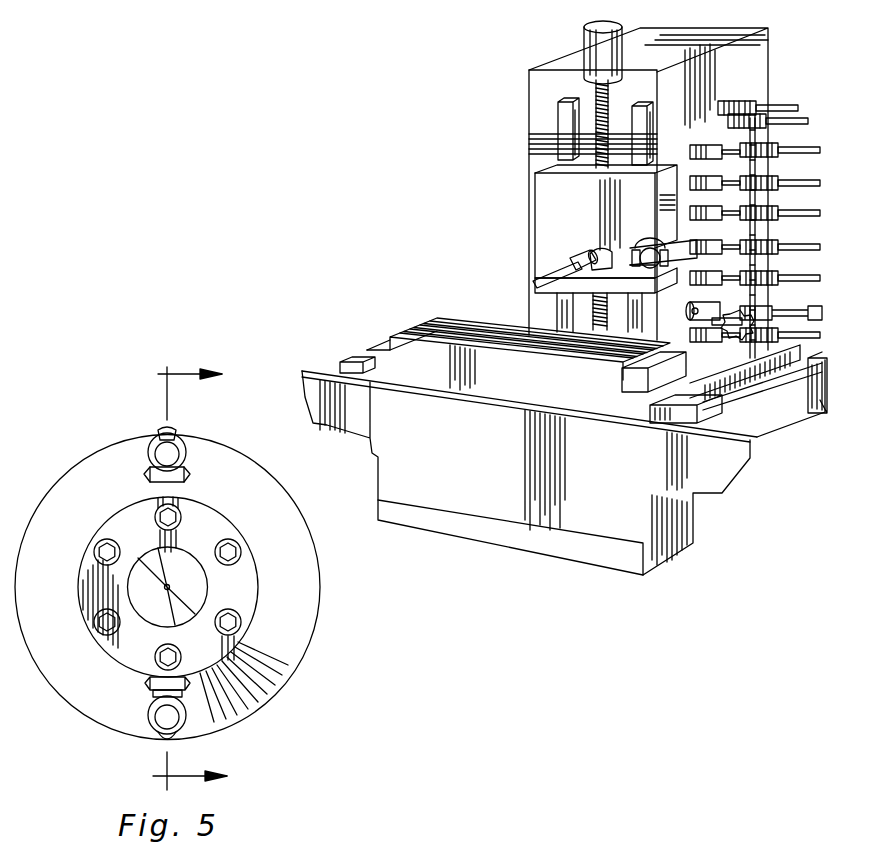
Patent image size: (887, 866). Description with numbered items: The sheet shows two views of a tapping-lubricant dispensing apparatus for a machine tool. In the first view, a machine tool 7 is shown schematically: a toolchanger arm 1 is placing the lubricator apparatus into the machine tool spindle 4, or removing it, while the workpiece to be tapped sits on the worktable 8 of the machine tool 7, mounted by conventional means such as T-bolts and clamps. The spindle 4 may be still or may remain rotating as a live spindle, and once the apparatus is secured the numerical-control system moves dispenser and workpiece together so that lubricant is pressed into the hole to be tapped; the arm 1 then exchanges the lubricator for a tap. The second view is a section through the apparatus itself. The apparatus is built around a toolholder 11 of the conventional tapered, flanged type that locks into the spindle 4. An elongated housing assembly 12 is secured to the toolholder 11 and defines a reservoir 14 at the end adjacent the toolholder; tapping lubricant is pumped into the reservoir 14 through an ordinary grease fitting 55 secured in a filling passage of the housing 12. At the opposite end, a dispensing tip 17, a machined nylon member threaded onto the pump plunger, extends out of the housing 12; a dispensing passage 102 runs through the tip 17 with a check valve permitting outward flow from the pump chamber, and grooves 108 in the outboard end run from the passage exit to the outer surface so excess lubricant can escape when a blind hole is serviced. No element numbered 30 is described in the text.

In FIG. 1A, the machine tool 7 is at (489, 170).
In FIG. 1A, the toolchanger arm 1 is at (626, 247).
In FIG. 1A, the machine tool spindle 4 is at (587, 249).
In FIG. 1A, the worktable 8 is at (388, 348).
In FIG. 1A, the tool indexing gear 30 is at (688, 312).
In FIG. 5, the elongated housing assembly 12 is at (321, 600).
In FIG. 5, the reservoir 14 is at (285, 633).
In FIG. 5, the dispensing end tip assembly 17 is at (193, 552).
In FIG. 5, the grease fitting 55 is at (180, 452).
In FIG. 5, the dispensing passage 102 is at (167, 587).
In FIG. 5, the grooves 108 is at (167, 587).
In FIG. 5, the toolholder 11 is at (207, 581).